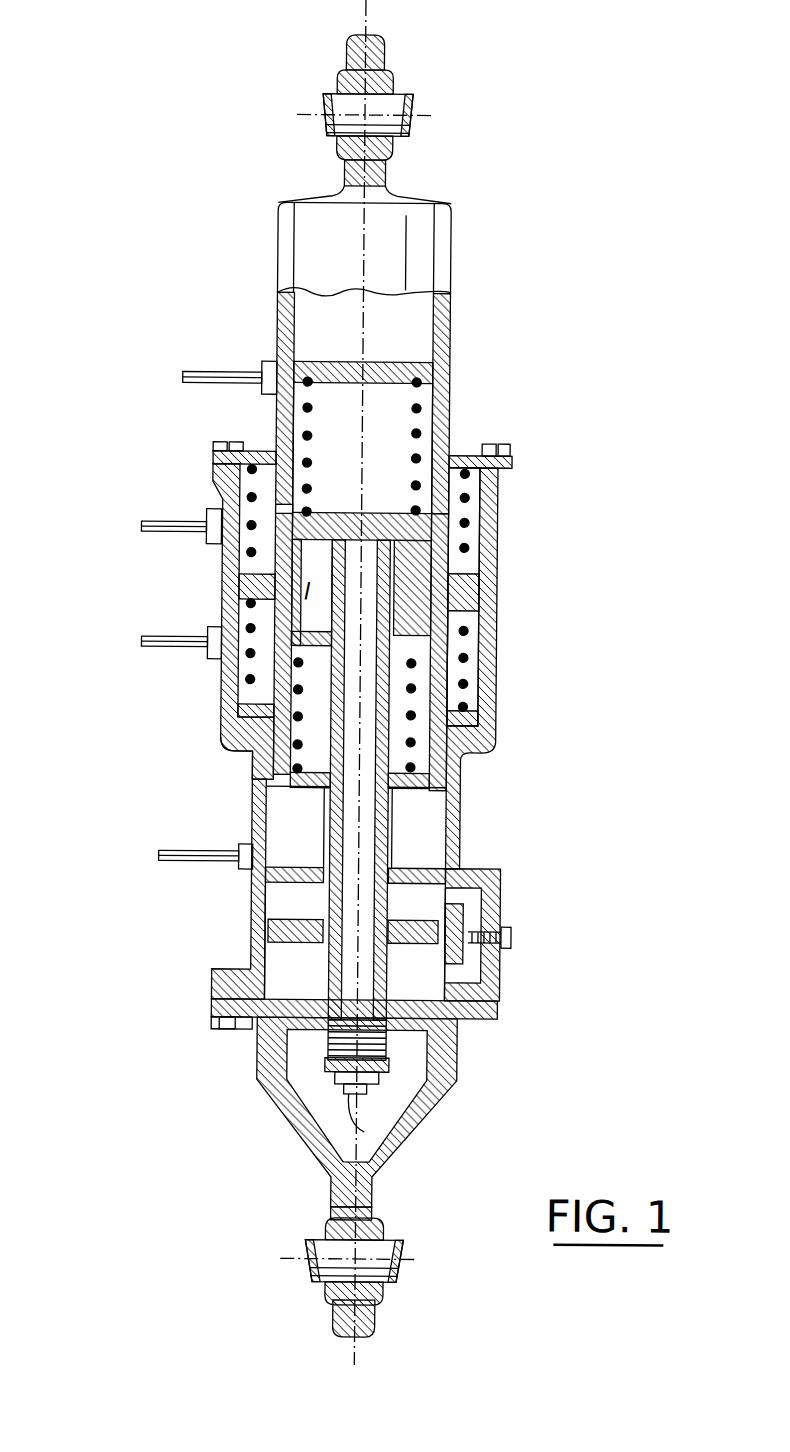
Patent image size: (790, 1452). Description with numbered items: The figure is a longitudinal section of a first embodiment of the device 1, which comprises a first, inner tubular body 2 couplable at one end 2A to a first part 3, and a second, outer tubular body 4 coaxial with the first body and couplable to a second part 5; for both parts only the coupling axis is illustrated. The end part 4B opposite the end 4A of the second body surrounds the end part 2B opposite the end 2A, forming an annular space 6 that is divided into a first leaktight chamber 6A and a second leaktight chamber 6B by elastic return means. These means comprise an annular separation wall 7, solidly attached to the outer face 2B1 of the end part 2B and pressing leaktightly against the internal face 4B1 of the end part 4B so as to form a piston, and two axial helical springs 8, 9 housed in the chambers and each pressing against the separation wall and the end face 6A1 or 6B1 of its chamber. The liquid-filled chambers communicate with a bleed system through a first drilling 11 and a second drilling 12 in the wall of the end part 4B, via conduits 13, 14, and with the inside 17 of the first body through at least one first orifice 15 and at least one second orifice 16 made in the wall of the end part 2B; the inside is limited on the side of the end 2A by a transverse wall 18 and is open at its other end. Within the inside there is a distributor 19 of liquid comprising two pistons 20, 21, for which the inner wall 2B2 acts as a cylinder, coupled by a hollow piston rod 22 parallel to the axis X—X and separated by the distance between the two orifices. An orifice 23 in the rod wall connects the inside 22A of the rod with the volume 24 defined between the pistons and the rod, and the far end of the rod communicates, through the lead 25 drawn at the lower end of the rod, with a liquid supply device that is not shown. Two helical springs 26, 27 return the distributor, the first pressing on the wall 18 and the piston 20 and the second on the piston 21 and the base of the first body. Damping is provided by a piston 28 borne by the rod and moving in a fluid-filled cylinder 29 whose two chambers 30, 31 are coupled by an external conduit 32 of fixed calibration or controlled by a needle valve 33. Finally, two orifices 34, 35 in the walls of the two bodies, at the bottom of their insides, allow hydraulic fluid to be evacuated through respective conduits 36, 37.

The device 1 is at (243, 250).
The first inner tubular body 2 is at (449, 350).
The end of first body 2A is at (330, 78).
The end part of first body 2B is at (458, 638).
The outer face of end part 2B 2B1 is at (463, 613).
The inner wall of first body 2B2 is at (430, 434).
The first part 3 is at (393, 106).
The second outer tubular body 4 is at (442, 1092).
The end of second body 4A is at (328, 1222).
The end part of second body 4B is at (222, 740).
The internal face of end part 4B 4B1 is at (466, 549).
The second part 5 is at (393, 1256).
The annular space 6 is at (246, 534).
The first leaktight chamber 6A is at (470, 512).
The end face of chamber 6A 6A1 is at (498, 472).
The second leaktight chamber 6B is at (466, 654).
The end face of chamber 6B 6B1 is at (478, 702).
The annular separation wall 7 is at (252, 652).
The axial helical spring 8 is at (258, 446).
The axial helical spring 9 is at (251, 685).
The first drilling 11 is at (233, 498).
The second drilling 12 is at (256, 622).
The conduit 13 is at (170, 523).
The conduit 14 is at (160, 640).
The first orifice 15 is at (288, 514).
The second orifice 16 is at (274, 646).
The inside of first body 17 is at (352, 449).
The transverse wall 18 is at (352, 370).
The distributor of liquid 19 is at (312, 801).
The piston 20 is at (353, 447).
The piston 21 is at (406, 636).
The piston rod 22 is at (444, 791).
The inside of rod 22A is at (376, 831).
The orifice 23 is at (364, 566).
The volume 24 is at (410, 586).
The wire lead 25 is at (368, 1124).
The helical spring 26 is at (418, 406).
The helical spring 27 is at (428, 746).
The piston 28 is at (284, 921).
The cylinder 29 is at (245, 943).
The chamber 30 is at (480, 870).
The chamber 31 is at (432, 1004).
The conduit 32 is at (490, 974).
The needle valve 33 is at (513, 940).
The orifice 34 is at (271, 362).
The orifice 35 is at (258, 848).
The conduit 36 is at (210, 375).
The conduit 37 is at (180, 856).